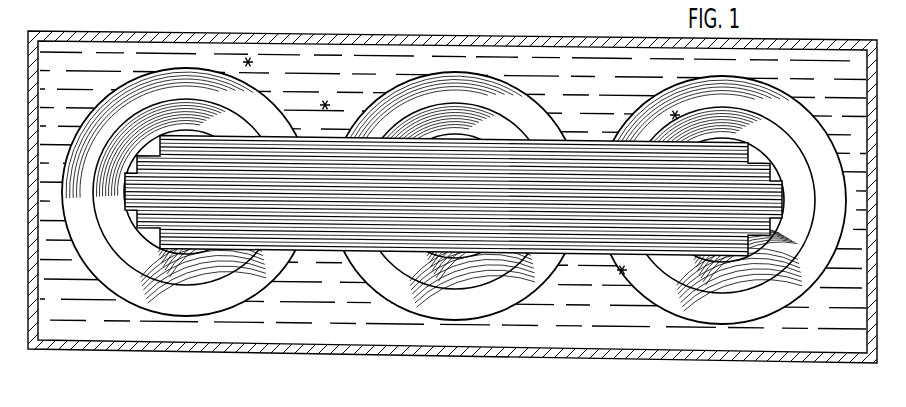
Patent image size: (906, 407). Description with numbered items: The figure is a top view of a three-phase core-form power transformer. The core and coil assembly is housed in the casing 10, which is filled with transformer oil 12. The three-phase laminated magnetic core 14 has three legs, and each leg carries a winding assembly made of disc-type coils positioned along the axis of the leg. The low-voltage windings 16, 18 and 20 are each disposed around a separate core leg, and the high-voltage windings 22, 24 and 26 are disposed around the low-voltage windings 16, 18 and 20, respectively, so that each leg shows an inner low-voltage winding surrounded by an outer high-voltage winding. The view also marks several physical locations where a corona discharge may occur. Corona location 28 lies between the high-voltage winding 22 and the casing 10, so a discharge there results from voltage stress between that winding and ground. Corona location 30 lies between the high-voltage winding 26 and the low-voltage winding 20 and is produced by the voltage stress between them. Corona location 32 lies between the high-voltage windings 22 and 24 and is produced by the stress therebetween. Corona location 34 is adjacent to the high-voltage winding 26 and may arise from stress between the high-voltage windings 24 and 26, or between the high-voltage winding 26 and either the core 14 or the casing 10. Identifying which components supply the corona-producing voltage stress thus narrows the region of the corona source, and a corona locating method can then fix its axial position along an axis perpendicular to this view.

The casing 10 is at (500, 43).
The transformer oil 12 is at (581, 331).
The three-phase laminated magnetic core 14 is at (313, 238).
The low-voltage winding 16 is at (238, 125).
The low-voltage winding 18 is at (506, 135).
The low-voltage winding 20 is at (793, 243).
The high-voltage winding 22 is at (279, 123).
The high-voltage winding 24 is at (549, 127).
The high-voltage winding 26 is at (818, 139).
The corona location 28 is at (251, 59).
The corona location 30 is at (673, 111).
The corona location 32 is at (328, 101).
The corona location 34 is at (620, 277).